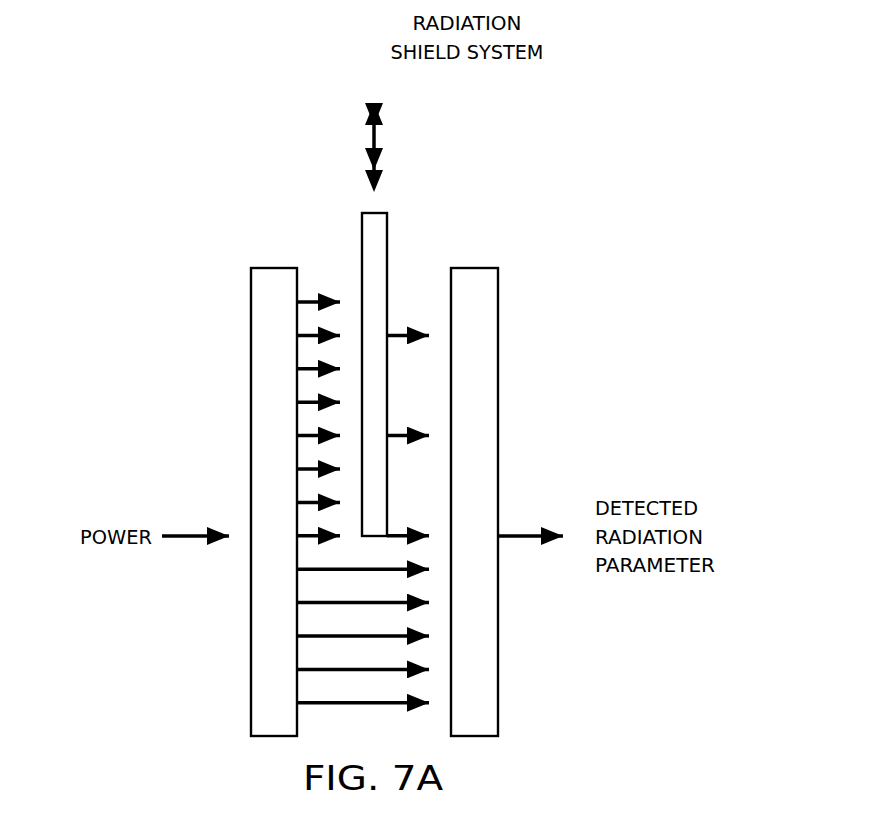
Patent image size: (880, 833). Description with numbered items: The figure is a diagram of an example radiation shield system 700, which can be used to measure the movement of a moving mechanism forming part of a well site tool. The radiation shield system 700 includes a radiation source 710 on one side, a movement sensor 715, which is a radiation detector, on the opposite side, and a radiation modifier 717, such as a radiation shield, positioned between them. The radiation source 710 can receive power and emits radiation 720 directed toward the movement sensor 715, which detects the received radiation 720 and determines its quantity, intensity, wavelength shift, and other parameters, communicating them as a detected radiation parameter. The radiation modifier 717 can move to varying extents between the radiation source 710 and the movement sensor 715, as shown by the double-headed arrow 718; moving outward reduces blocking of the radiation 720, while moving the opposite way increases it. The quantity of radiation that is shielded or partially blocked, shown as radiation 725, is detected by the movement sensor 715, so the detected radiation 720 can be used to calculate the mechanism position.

The radiation shield system 700 is at (452, 132).
The radiation source 710 is at (251, 487).
The movement sensor 715 is at (498, 487).
The radiation modifier 717 is at (362, 237).
The double-headed arrow 718 is at (372, 146).
The radiation 720 is at (433, 686).
The partially blocked radiation 725 is at (432, 386).